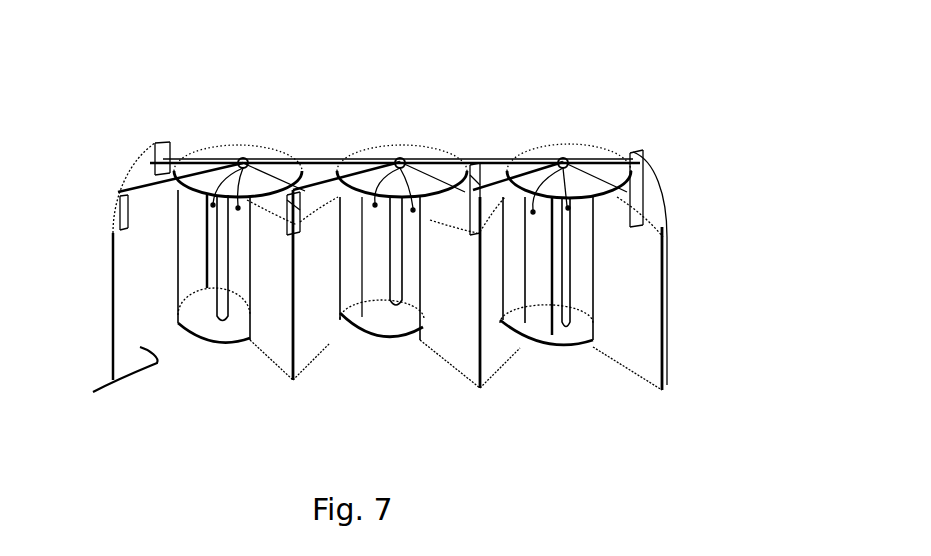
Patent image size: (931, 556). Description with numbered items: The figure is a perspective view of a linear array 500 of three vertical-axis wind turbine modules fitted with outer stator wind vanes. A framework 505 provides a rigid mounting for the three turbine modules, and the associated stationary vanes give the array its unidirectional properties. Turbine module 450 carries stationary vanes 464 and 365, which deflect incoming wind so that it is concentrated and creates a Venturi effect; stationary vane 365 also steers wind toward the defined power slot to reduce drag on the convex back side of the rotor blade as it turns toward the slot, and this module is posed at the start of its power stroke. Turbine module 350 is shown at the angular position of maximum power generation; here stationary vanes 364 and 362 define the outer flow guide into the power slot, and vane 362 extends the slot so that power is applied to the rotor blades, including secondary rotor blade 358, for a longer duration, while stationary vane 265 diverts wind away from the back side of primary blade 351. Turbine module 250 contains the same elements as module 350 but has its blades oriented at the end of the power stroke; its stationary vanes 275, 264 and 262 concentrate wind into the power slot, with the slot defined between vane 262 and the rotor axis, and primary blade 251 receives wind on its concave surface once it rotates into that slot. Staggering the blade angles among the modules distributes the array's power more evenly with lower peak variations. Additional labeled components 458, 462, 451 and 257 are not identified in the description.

The linear array 500 is at (614, 86).
The turbine module 450 is at (262, 145).
The turbine module 350 is at (422, 143).
The turbine module 250 is at (578, 143).
The framework 505 is at (609, 158).
The top rail 458 is at (192, 158).
The left mounting bracket 462 is at (163, 142).
The first spindle 451 is at (217, 158).
The stationary vane 362 is at (333, 156).
The primary blade 351 is at (393, 158).
The secondary rotor blade 358 is at (353, 160).
The stationary vane 262 is at (480, 160).
The primary blade 251 is at (515, 158).
The third hub 257 is at (580, 155).
The stationary vane 464 is at (117, 372).
The stationary vane 365 is at (273, 368).
The stationary vane 364 is at (308, 348).
The stationary vane 265 is at (450, 373).
The stationary vane 264 is at (493, 345).
The stationary vane 275 is at (615, 373).